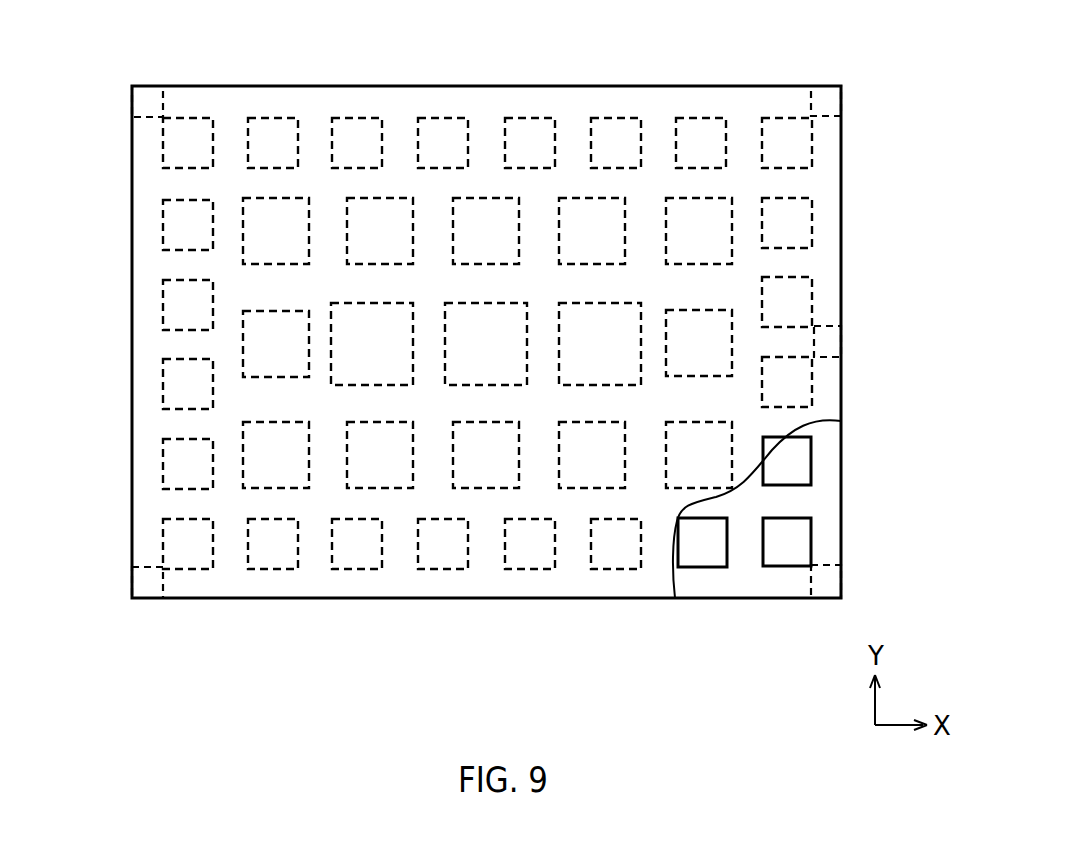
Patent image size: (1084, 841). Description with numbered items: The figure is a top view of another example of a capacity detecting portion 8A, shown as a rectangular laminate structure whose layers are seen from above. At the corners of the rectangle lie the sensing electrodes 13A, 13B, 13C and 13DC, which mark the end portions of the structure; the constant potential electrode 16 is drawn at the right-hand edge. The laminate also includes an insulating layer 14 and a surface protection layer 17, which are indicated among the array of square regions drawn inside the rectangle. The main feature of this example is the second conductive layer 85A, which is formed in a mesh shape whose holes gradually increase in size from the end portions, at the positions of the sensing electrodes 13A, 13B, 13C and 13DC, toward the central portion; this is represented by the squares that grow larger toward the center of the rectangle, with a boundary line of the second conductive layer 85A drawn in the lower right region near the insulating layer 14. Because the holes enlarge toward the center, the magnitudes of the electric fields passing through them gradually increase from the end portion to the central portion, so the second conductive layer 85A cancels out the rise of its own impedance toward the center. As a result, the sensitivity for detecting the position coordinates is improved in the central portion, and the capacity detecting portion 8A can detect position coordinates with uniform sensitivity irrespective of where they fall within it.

The capacity detecting portion 8A is at (704, 61).
The sensing electrode 13A is at (150, 103).
The sensing electrode 13B is at (150, 585).
The sensing electrode 13C is at (826, 582).
The alignment mark 13DC is at (823, 101).
The insulating layer 14 is at (777, 533).
The constant potential electrode 16 is at (834, 348).
The surface protection layer 17 is at (825, 147).
The second conductive layer 85A is at (755, 578).